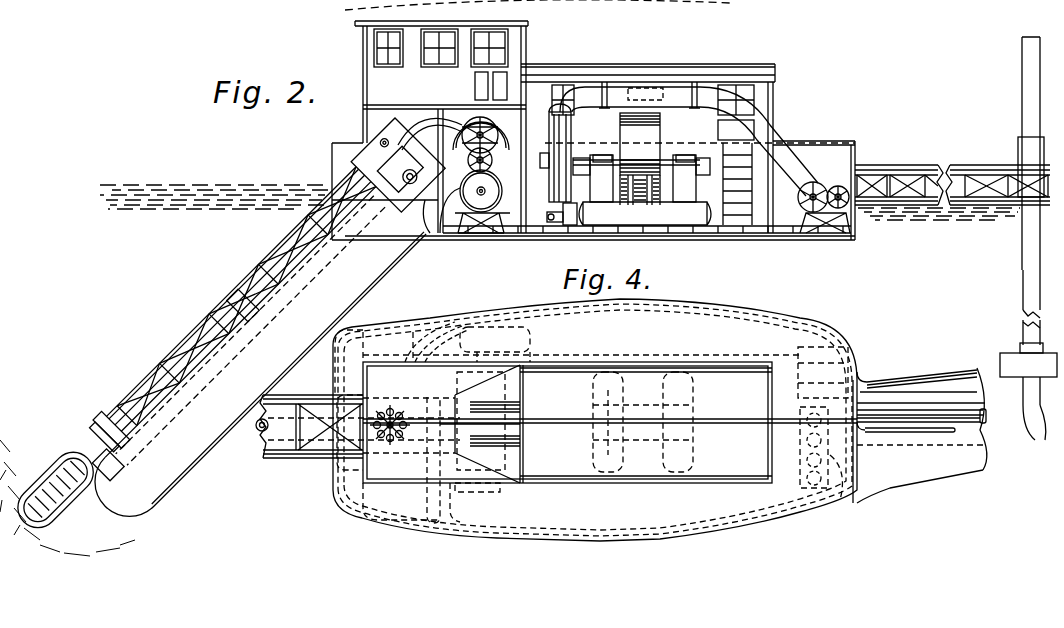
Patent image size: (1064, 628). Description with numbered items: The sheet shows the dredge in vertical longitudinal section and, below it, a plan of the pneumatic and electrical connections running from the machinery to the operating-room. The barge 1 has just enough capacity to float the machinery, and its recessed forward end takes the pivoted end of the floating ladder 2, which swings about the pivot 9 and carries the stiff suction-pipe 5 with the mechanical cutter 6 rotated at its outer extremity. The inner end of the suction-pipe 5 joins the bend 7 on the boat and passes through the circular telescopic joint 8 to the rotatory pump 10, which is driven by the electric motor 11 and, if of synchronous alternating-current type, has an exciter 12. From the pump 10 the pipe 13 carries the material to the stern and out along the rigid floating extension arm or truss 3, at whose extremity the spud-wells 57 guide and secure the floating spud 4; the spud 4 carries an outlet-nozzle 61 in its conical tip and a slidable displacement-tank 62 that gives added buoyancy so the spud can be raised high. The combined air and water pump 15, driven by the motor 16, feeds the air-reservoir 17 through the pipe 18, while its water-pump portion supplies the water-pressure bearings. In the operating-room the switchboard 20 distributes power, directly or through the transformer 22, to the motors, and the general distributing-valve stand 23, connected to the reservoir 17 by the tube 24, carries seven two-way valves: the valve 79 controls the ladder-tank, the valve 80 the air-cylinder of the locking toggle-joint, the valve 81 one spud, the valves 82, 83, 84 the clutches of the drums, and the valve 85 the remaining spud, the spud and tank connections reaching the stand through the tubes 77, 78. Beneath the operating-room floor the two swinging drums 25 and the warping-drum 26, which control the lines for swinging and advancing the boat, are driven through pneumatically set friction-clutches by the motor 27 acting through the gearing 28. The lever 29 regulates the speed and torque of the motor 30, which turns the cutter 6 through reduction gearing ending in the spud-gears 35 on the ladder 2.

In FIG. 2, the barge 1 is at (795, 236).
In FIG. 4, the barge 1 is at (595, 420).
In FIG. 2, the floating ladder 2 is at (262, 300).
In FIG. 4, the floating ladder 2 is at (332, 440).
In FIG. 2, the rigid floating extension arm or truss 3 is at (952, 173).
In FIG. 4, the rigid floating extension arm or truss 3 is at (920, 430).
In FIG. 2, the floating spud 4 is at (1023, 128).
In FIG. 4, the floating spud 4 is at (1023, 290).
In FIG. 2, the suction-pipe 5 is at (272, 345).
In FIG. 4, the suction-pipe 5 is at (258, 430).
In FIG. 2, the mechanical cutter 6 is at (67, 498).
In FIG. 2, the bend 7 is at (428, 232).
In FIG. 2, the circular telescopic joint 8 is at (432, 220).
In FIG. 2, the pivot 9 is at (408, 173).
In FIG. 2, the rotatory pump 10 is at (558, 162).
In FIG. 4, the rotatory pump 10 is at (522, 342).
In FIG. 2, the electric motor 11 is at (642, 169).
In FIG. 4, the electric motor 11 is at (672, 396).
In FIG. 2, the exciter 12 is at (572, 228).
In FIG. 2, the pipe 13 is at (689, 139).
In FIG. 2, the combined air and water pump 15 is at (835, 212).
In FIG. 4, the combined air and water pump 15 is at (803, 477).
In FIG. 2, the motor 16 is at (800, 212).
In FIG. 4, the motor 16 is at (805, 348).
In FIG. 4, the air-reservoir 17 is at (446, 512).
In FIG. 4, the pipe 18 is at (525, 532).
In FIG. 4, the switchboard 20 is at (475, 400).
In FIG. 4, the transformer 22 is at (405, 332).
In FIG. 4, the general distributing-valve stand 23 is at (349, 405).
In FIG. 4, the tube 24 is at (428, 490).
In FIG. 2, the swinging drum 25 is at (456, 118).
In FIG. 2, the warping-drum 26 is at (499, 131).
In FIG. 2, the motor 27 is at (500, 190).
In FIG. 4, the motor 27 is at (500, 494).
In FIG. 2, the gearing 28 is at (492, 170).
In FIG. 4, the lever 29 is at (426, 362).
In FIG. 4, the motor 30 is at (497, 328).
In FIG. 2, the spud-gears 35 is at (92, 427).
In FIG. 2, the spud-well 57 is at (1054, 156).
In FIG. 4, the outlet-nozzle 61 is at (1039, 430).
In FIG. 4, the displacement-tank 62 is at (1028, 360).
In FIG. 4, the tube 77 is at (725, 304).
In FIG. 4, the tube 78 is at (755, 304).
In FIG. 4, the valve 79 is at (372, 420).
In FIG. 4, the valve 80 is at (390, 440).
In FIG. 4, the valve 81 is at (395, 438).
In FIG. 4, the valve 82 is at (402, 432).
In FIG. 4, the valve 83 is at (404, 424).
In FIG. 4, the valve 84 is at (388, 412).
In FIG. 4, the valve 85 is at (398, 412).